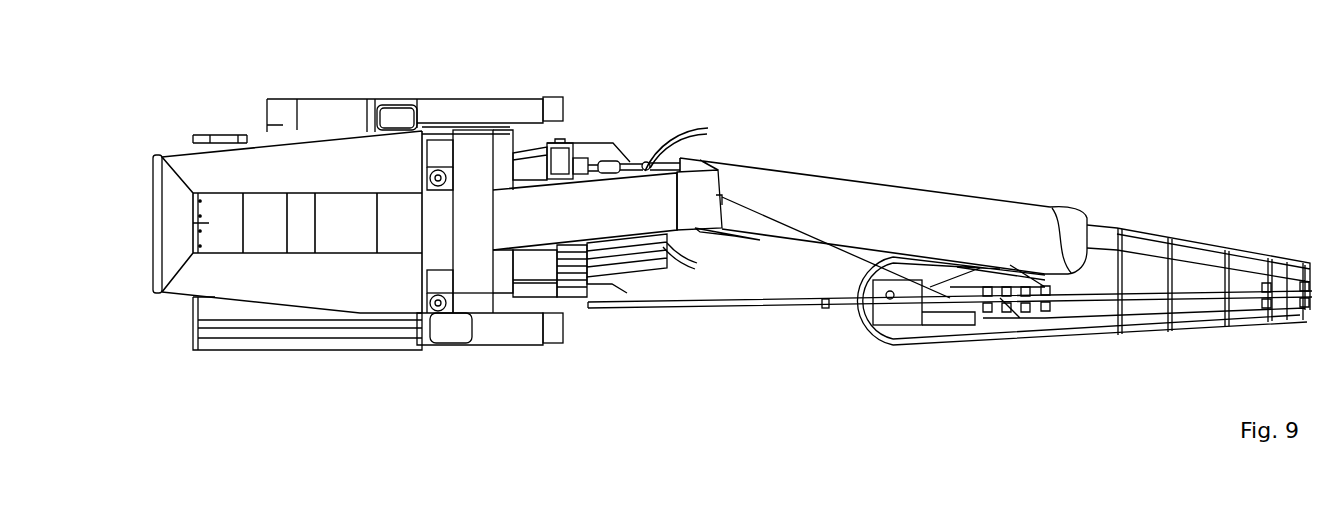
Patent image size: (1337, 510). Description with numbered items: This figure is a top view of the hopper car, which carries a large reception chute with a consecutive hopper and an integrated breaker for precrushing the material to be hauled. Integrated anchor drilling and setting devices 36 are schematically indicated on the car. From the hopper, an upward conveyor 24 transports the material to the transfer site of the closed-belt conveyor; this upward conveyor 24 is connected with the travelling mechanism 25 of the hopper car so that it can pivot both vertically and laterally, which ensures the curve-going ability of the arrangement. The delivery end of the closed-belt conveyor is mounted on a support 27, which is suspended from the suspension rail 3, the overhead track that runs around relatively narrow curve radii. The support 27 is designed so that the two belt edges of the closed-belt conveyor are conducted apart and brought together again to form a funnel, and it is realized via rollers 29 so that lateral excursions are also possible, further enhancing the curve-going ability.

The overhead track 3 is at (792, 305).
The upward conveyor 24 is at (765, 192).
The travelling mechanism 25 is at (332, 118).
The support 27 is at (1147, 237).
The rollers 29 is at (1008, 300).
The anchor drilling and setting devices 36 is at (440, 157).